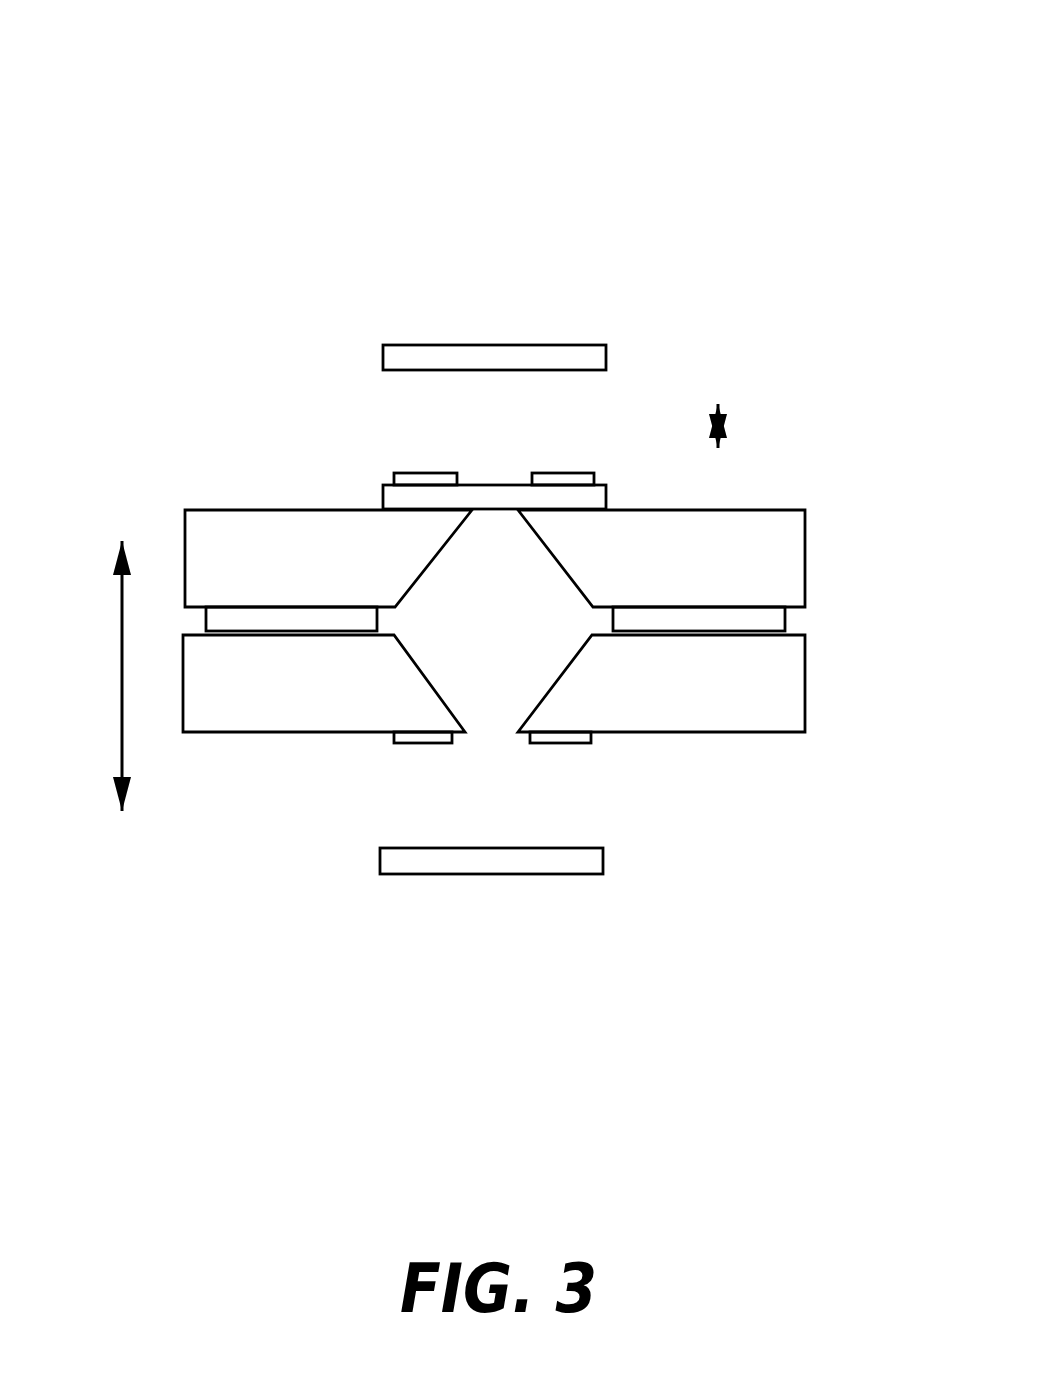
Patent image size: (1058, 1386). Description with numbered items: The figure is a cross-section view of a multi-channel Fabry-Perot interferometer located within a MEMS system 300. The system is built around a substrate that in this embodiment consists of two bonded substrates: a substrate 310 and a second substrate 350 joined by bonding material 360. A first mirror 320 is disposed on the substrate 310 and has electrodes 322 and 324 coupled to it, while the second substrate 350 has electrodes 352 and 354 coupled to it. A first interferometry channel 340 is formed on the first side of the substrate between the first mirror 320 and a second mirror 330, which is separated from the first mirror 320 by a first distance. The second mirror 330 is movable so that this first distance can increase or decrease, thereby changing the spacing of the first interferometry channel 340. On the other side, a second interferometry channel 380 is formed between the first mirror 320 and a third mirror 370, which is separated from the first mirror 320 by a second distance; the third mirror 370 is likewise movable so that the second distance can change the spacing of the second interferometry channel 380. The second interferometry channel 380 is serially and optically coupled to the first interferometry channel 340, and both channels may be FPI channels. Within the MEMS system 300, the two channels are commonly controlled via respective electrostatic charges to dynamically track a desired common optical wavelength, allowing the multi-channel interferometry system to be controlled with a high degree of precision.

The MEMS system 300 is at (832, 134).
The substrate 310 is at (268, 583).
The first mirror 320 is at (383, 498).
The electrode 322 is at (410, 473).
The electrode 324 is at (557, 473).
The second mirror 330 is at (480, 345).
The first interferometry channel 340 is at (574, 416).
The second substrate 350 is at (268, 708).
The electrode 352 is at (390, 743).
The electrode 354 is at (593, 742).
The bonding material 360 is at (785, 623).
The third mirror 370 is at (487, 874).
The second interferometry channel 380 is at (594, 808).